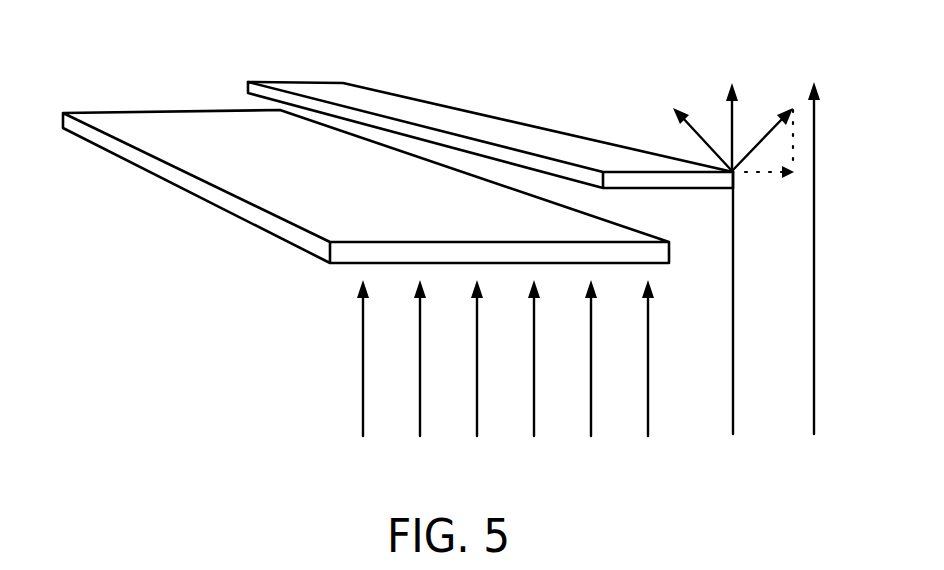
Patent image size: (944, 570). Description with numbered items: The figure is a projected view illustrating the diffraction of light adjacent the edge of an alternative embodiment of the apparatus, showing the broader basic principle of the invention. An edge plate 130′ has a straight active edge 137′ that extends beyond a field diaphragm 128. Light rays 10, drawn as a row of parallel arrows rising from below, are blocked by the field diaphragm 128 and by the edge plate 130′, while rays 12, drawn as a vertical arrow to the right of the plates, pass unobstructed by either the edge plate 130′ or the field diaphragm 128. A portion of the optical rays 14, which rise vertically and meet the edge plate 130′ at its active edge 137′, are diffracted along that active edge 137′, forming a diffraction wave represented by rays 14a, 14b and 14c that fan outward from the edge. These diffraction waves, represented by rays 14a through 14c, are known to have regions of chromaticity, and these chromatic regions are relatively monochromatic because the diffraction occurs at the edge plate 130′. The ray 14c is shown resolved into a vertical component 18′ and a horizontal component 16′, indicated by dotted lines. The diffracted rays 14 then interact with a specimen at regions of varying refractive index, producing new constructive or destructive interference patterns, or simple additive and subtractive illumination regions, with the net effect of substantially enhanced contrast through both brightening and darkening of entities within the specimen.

The field diaphragm 128 is at (150, 119).
The edge plate 130′ is at (490, 98).
The straight active edge 137′ is at (347, 83).
The diffracted ray 14a is at (692, 118).
The diffracted ray 14b is at (736, 110).
The diffracted ray 14c is at (770, 108).
The vertical component 18′ is at (792, 146).
The horizontal component 16′ is at (787, 172).
The rays 12 is at (814, 266).
The optical rays 14 is at (733, 410).
The light rays 10 is at (340, 345).